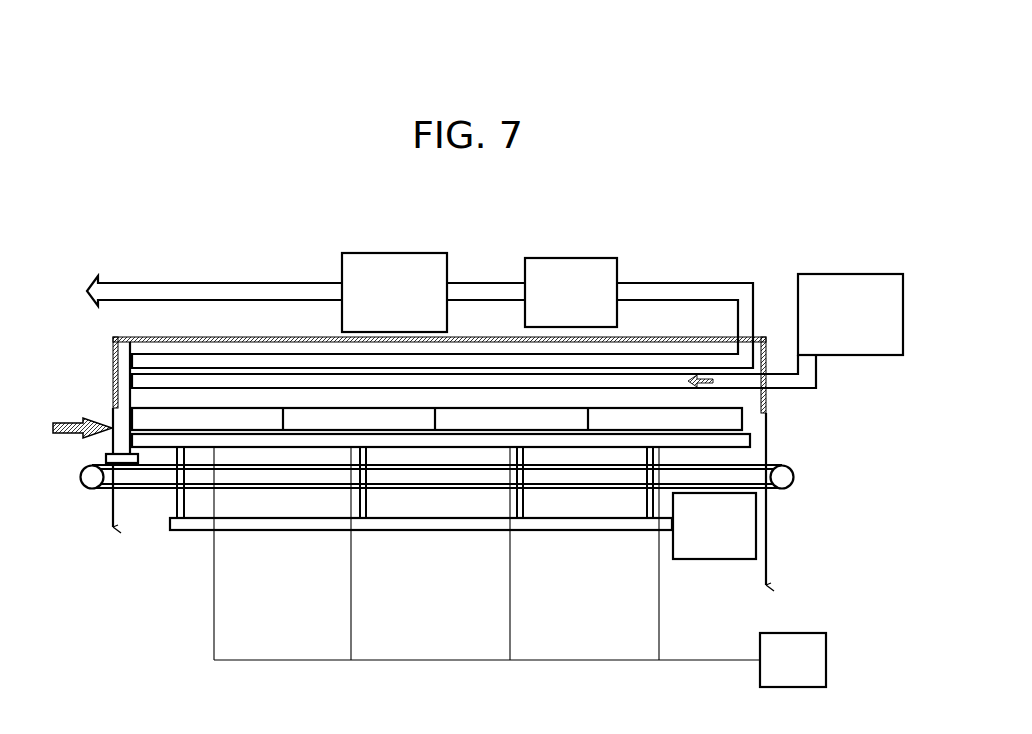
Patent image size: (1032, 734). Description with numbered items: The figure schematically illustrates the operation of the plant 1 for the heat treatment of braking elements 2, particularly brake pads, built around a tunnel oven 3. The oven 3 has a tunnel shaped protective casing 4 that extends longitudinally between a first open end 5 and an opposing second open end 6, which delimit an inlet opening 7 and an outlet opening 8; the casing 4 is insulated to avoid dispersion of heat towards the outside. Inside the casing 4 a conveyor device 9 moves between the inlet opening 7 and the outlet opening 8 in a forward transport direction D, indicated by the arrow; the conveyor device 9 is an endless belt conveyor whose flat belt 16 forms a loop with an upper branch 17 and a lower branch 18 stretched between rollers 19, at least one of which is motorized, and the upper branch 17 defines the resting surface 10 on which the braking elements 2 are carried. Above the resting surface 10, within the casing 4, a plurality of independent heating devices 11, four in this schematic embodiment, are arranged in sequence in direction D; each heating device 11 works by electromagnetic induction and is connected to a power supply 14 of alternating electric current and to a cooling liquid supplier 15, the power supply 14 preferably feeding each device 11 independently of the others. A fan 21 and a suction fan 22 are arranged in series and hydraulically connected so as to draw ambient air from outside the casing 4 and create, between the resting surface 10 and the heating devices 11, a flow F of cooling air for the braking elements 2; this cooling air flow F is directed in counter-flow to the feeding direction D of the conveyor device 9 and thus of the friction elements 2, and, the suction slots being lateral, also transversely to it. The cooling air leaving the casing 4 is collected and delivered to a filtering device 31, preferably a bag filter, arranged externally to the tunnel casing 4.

The plant 1 is at (726, 196).
The braking elements 2 is at (127, 465).
The tunnel oven 3 is at (778, 560).
The protective casing 4 is at (768, 413).
The first open end 5 is at (101, 365).
The second open end 6 is at (781, 398).
The inlet opening 7 is at (101, 444).
The outlet opening 8 is at (782, 443).
The conveyor device 9 is at (151, 497).
The resting surface 10 is at (291, 452).
The heating devices 11 is at (316, 418).
The power supply 14 is at (817, 657).
The cooling liquid supplier 15 is at (707, 548).
The flat belt 16 is at (700, 489).
The upper branch 17 is at (238, 470).
The lower branch 18 is at (268, 482).
The rollers 19 is at (90, 486).
The fan 21 is at (848, 283).
The suction fan 22 is at (387, 264).
The filtering device 31 is at (562, 272).
The forward transport direction D is at (62, 420).
The cooling air flow F is at (705, 373).